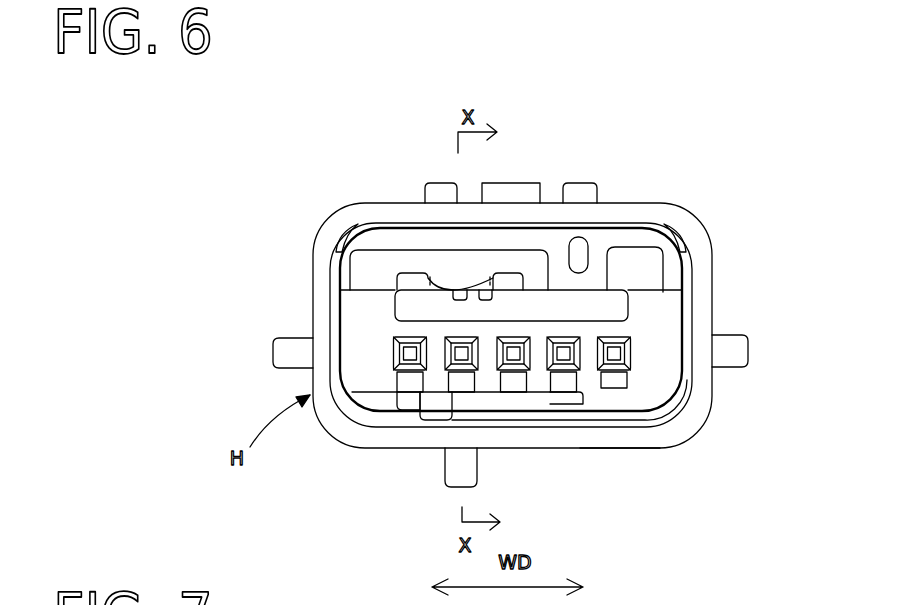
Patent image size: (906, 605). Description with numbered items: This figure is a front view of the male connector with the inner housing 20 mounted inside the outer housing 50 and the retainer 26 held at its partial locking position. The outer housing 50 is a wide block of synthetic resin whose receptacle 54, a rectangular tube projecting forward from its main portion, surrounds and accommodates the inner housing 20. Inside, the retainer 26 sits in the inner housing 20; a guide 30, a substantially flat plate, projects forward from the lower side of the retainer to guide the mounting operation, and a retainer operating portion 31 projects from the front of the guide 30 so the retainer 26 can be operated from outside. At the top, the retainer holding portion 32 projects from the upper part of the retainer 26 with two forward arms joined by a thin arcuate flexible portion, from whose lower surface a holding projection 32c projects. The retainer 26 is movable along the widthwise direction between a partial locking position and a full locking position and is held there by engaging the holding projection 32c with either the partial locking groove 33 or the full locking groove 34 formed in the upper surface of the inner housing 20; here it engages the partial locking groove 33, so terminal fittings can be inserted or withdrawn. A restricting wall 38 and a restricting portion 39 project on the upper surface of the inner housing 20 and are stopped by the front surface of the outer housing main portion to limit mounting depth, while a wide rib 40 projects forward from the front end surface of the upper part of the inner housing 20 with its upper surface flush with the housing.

The inner housing 20 is at (668, 405).
The retainer 26 is at (553, 397).
The guide 30 is at (412, 401).
The retainer operating portion 31 is at (440, 412).
The retainer holding portion 32 is at (460, 291).
The holding projection 32c is at (460, 289).
The partial locking groove 33 is at (456, 291).
The full locking groove 34 is at (493, 291).
The restricting wall 38 is at (370, 267).
The restricting portion 39 is at (648, 265).
The wide rib 40 is at (582, 302).
The outer housing 50 is at (700, 402).
The receptacle 54 is at (625, 445).